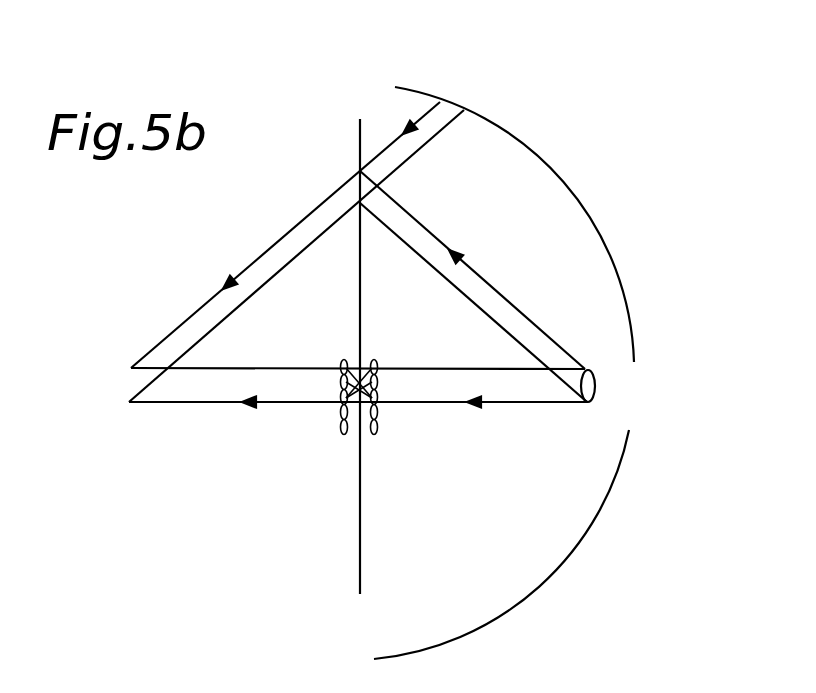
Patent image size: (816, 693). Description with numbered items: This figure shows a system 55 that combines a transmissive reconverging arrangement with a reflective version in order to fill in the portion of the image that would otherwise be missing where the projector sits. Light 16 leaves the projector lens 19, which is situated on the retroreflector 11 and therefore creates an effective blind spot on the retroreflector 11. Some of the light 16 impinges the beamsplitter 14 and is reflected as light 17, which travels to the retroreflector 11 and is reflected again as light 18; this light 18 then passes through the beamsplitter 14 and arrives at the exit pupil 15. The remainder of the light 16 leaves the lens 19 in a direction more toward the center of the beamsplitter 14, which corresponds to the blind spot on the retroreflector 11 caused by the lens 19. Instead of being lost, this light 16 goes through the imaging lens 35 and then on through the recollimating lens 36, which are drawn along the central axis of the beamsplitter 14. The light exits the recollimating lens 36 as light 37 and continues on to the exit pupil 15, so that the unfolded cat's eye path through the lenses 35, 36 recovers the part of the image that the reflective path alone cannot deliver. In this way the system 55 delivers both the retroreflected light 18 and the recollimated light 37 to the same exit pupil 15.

The retroreflector 11 is at (577, 200).
The beamsplitter 14 is at (358, 513).
The exit pupil 15 is at (125, 384).
The light 16 is at (482, 277).
The light 17 is at (372, 157).
The light 18 is at (225, 282).
The projector lens 19 is at (593, 380).
The imaging lens 35 is at (373, 437).
The recollimating lens 36 is at (342, 437).
The light 37 is at (249, 403).
The system 55 is at (552, 92).